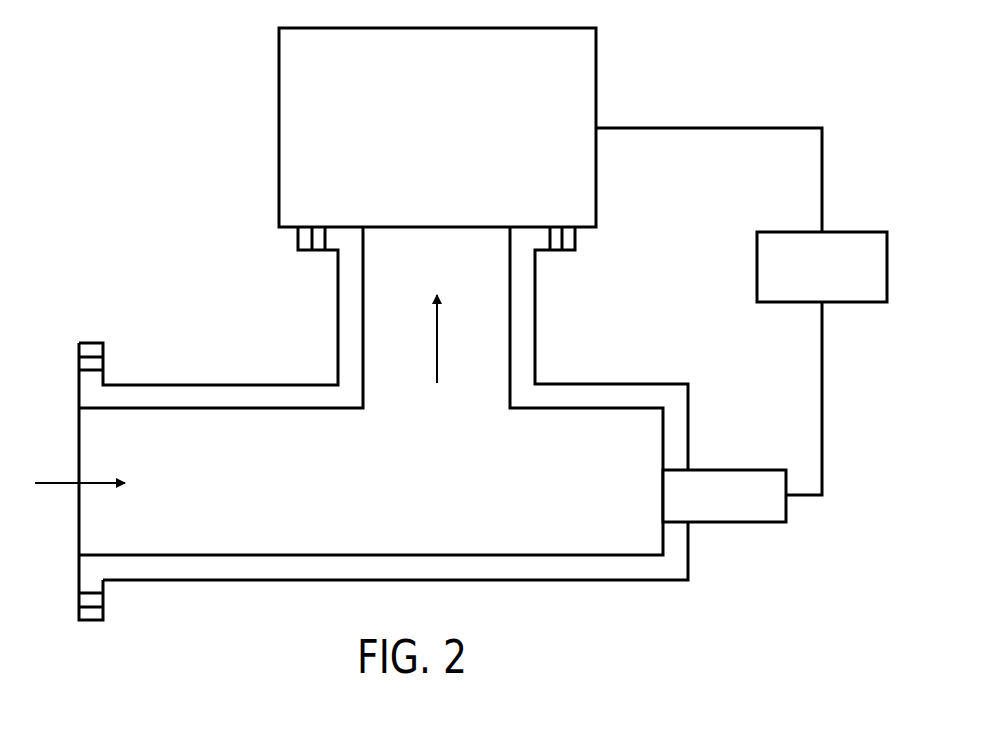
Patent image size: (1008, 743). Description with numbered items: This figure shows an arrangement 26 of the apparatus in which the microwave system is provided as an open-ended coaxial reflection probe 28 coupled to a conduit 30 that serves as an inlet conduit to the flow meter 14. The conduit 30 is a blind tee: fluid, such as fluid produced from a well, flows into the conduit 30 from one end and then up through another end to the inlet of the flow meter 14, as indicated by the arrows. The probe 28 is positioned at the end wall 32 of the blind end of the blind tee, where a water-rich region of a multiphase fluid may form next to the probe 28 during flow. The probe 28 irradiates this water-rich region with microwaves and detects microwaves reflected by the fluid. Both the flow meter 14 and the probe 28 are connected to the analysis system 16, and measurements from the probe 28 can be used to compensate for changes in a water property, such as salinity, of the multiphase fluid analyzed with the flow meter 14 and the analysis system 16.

The flow meter 14 is at (596, 78).
The analysis system 16 is at (773, 232).
The arrangement 26 is at (150, 205).
The open-ended coaxial reflection probe 28 is at (725, 522).
The conduit 30 is at (222, 385).
The end wall 32 is at (688, 427).